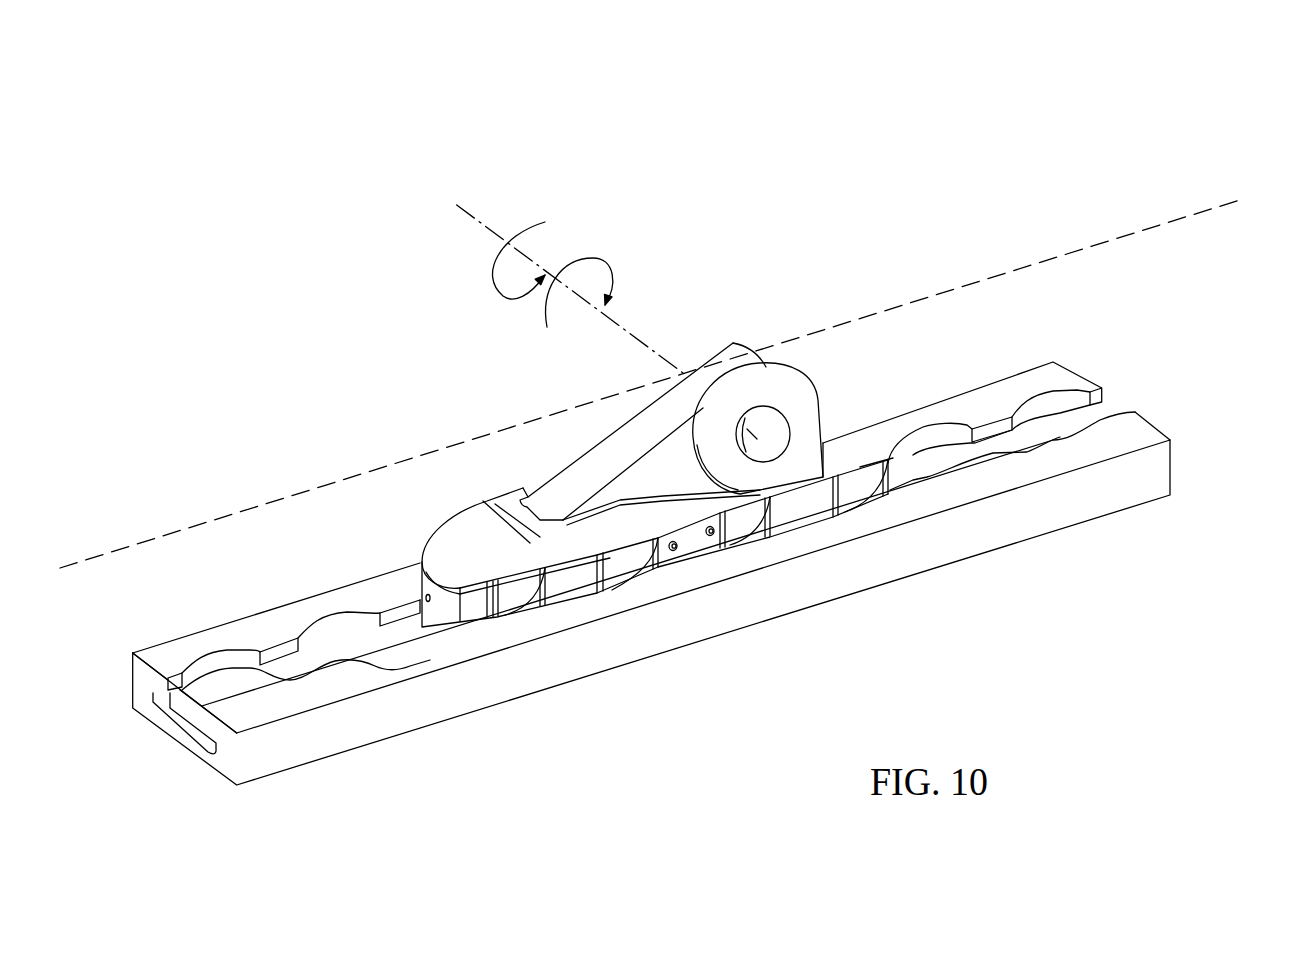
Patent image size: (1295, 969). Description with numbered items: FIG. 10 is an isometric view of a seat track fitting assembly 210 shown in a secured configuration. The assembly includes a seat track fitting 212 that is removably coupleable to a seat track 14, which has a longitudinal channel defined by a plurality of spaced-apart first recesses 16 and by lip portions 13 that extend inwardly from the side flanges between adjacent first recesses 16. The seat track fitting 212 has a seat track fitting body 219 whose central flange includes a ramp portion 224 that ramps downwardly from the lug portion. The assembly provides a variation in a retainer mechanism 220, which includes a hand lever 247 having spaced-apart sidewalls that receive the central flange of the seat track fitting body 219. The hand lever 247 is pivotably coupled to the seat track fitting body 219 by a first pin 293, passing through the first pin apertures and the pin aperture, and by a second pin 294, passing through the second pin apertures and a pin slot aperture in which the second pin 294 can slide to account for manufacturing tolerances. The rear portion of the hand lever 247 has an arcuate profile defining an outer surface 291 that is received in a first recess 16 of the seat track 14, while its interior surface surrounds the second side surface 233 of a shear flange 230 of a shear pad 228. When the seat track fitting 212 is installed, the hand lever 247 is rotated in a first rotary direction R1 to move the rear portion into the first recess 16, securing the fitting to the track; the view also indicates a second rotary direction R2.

The lip portions 13 is at (1033, 447).
The seat track 14 is at (1050, 376).
The first recesses 16 is at (345, 636).
The seat track fitting assembly 210 is at (1228, 322).
The seat track fitting 212 is at (563, 455).
The seat track fitting body 219 is at (818, 445).
The retainer mechanism 220 is at (545, 590).
The ramp portion 224 is at (632, 432).
The shear pad 228 is at (745, 546).
The shear flange 230 is at (604, 588).
The second side surface 233 is at (503, 620).
The hand lever 247 is at (455, 550).
The outer surface 291 is at (418, 604).
The first pin 293 is at (714, 540).
The second pin 294 is at (675, 552).
The first rotary direction R1 is at (493, 267).
The rotation direction R2 is at (603, 258).